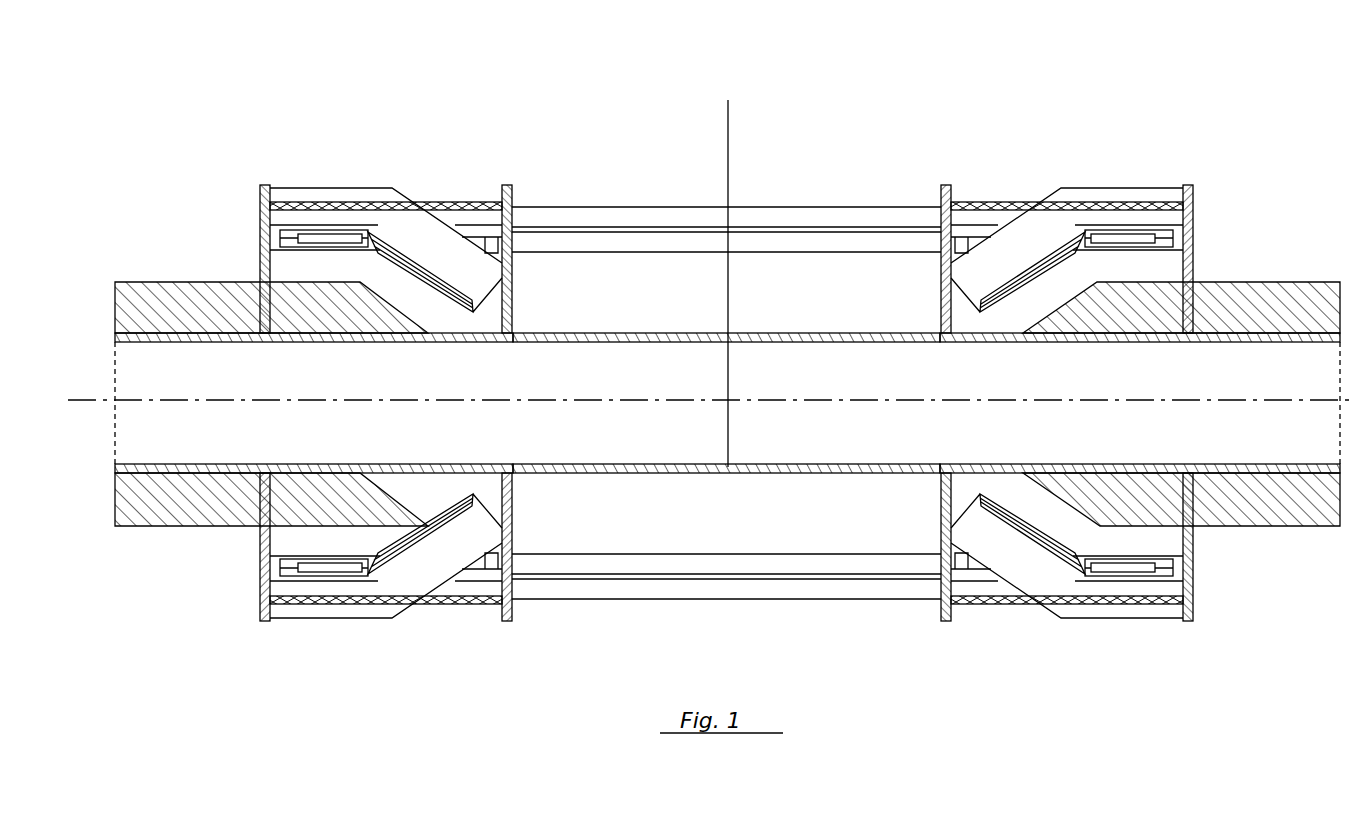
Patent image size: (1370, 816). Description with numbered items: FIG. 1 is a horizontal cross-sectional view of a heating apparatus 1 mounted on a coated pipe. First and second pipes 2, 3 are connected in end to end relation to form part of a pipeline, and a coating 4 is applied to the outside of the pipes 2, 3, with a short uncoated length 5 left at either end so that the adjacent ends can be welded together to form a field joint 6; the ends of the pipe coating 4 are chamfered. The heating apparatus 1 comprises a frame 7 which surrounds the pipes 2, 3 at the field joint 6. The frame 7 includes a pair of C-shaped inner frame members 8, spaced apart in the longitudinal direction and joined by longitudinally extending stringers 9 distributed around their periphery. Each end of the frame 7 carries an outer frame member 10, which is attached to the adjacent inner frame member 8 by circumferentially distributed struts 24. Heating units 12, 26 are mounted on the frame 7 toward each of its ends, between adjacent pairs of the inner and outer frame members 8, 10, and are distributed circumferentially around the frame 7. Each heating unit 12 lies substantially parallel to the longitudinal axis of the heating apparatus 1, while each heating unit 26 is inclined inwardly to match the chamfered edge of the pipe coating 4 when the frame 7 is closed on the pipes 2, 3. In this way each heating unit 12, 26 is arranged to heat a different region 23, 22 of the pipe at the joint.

The heating apparatus 1 is at (960, 126).
The first pipe 2 is at (283, 368).
The second pipe 3 is at (1243, 368).
The pipe coating 4 is at (186, 284).
The uncoated length 5 is at (882, 322).
The field joint 6 is at (728, 338).
The frame 7 is at (902, 199).
The inner frame member 8 is at (509, 184).
The stringer 9 is at (686, 213).
The outer frame member 10 is at (265, 183).
The heating unit 12 is at (359, 178).
The region 22 is at (1056, 299).
The region 23 is at (1156, 268).
The strut 24 is at (452, 607).
The heating unit 26 is at (456, 214).